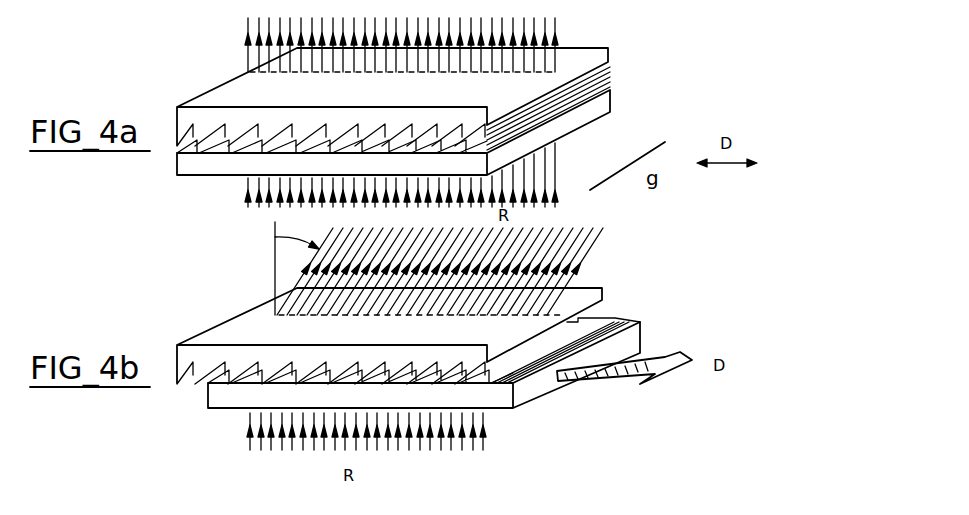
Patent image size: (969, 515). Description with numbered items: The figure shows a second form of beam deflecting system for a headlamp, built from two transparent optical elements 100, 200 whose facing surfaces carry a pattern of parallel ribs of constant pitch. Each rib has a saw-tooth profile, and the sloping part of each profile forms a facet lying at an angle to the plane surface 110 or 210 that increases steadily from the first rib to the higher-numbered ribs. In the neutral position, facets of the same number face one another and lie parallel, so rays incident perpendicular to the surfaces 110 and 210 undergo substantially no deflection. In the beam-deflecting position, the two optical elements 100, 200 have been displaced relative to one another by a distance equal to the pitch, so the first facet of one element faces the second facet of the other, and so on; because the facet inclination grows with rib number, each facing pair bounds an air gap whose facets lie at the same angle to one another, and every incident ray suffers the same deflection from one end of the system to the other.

In FIG. 4a, the transparent optical element 100 is at (612, 52).
In FIG. 4b, the transparent optical element 100 is at (606, 292).
In FIG. 4a, the plane surface 110 is at (220, 106).
In FIG. 4b, the plane surface 110 is at (240, 335).
In FIG. 4a, the transparent optical element 200 is at (612, 97).
In FIG. 4b, the transparent optical element 200 is at (642, 336).
In FIG. 4a, the plane surface 210 is at (222, 168).
In FIG. 4b, the plane surface 210 is at (224, 410).